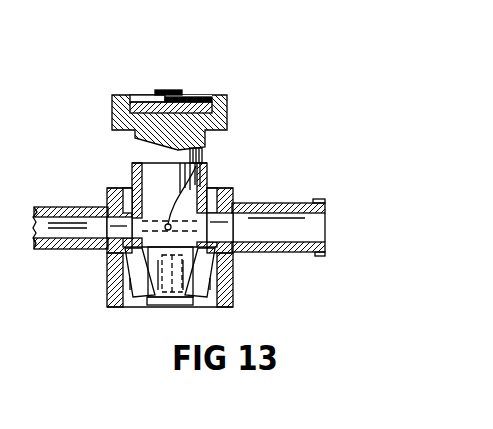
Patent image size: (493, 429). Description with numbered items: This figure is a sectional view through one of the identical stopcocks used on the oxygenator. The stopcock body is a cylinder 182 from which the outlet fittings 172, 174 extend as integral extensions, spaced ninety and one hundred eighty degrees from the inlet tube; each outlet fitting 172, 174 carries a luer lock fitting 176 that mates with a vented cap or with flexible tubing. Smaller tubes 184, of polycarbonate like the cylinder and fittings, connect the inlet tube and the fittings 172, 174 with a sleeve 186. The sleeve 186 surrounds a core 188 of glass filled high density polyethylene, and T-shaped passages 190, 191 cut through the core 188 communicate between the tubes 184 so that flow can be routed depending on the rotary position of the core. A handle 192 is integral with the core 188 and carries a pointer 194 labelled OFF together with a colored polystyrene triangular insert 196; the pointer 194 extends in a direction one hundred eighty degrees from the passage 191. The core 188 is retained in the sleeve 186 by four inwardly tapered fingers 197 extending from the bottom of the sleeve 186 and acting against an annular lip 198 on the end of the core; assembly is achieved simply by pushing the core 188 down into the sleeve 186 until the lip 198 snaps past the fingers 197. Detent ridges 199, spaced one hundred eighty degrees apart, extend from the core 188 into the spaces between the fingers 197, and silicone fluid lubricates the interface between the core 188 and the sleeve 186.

The outlet fitting 172 is at (48, 250).
The outlet fitting 174 is at (285, 253).
The luer lock fitting 176 is at (317, 200).
The cylinder 182 is at (232, 280).
The smaller tubes 184 is at (112, 253).
The sleeve 186 is at (132, 185).
The core 188 is at (165, 183).
The T-shaped passage 190 is at (105, 192).
The T-shaped passage 191 is at (213, 186).
The handle 192 is at (123, 95).
The pointer 194 is at (180, 89).
The triangular insert 196 is at (190, 102).
The inwardly tapered fingers 197 is at (125, 292).
The annular lip 198 is at (172, 298).
The detent ridges 199 is at (153, 277).